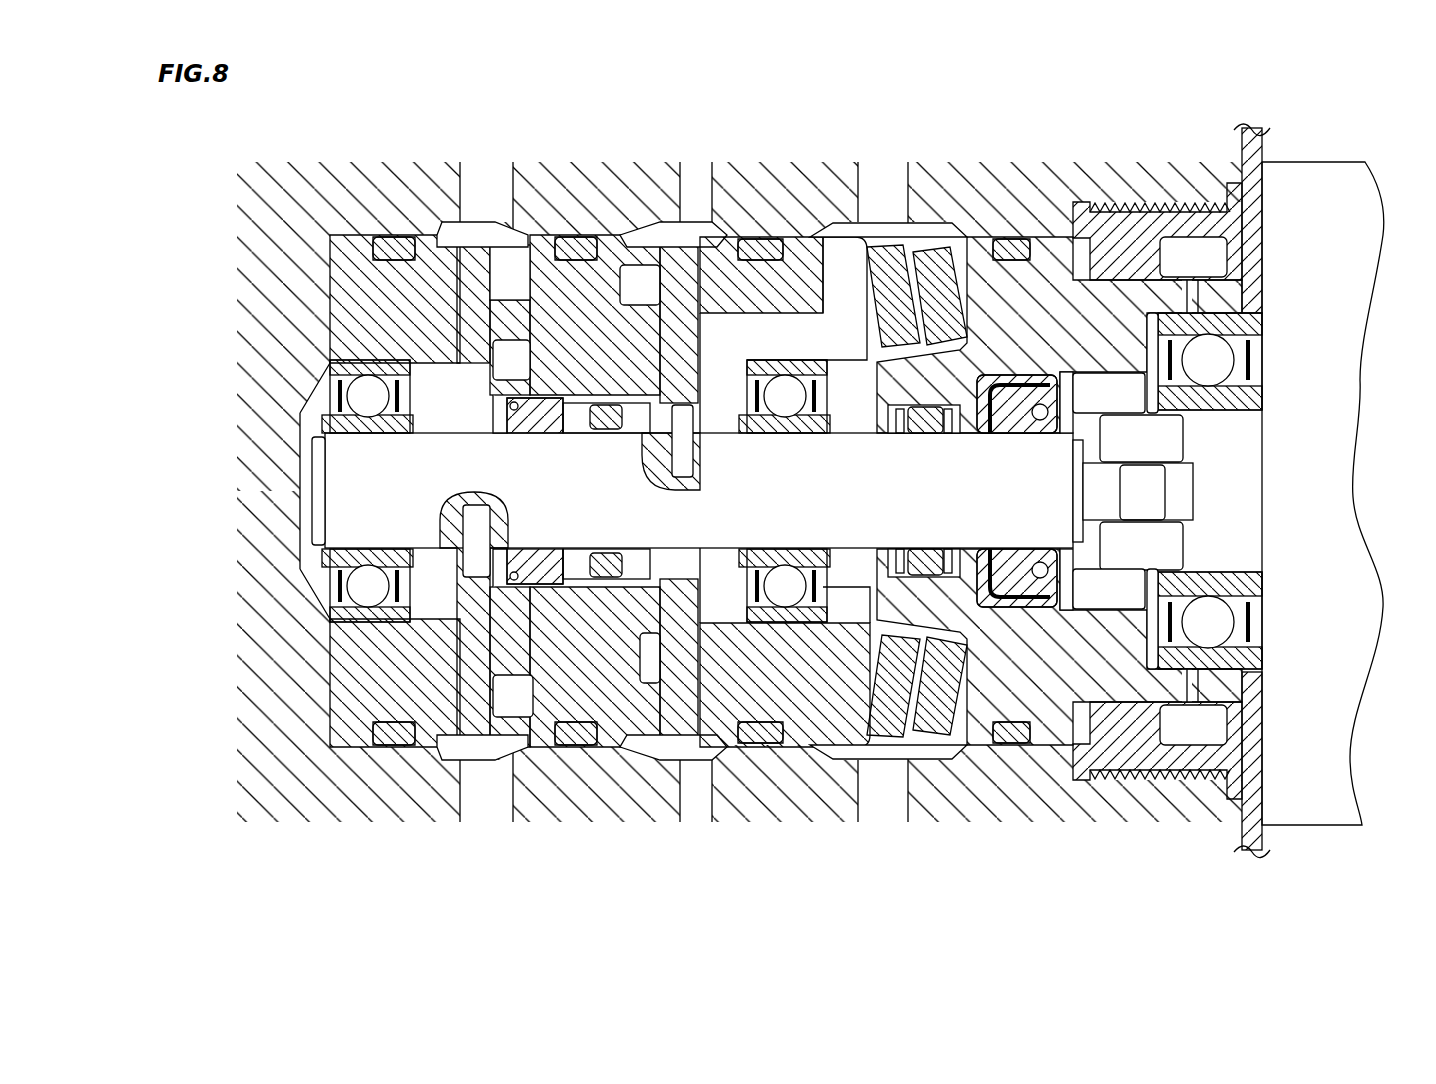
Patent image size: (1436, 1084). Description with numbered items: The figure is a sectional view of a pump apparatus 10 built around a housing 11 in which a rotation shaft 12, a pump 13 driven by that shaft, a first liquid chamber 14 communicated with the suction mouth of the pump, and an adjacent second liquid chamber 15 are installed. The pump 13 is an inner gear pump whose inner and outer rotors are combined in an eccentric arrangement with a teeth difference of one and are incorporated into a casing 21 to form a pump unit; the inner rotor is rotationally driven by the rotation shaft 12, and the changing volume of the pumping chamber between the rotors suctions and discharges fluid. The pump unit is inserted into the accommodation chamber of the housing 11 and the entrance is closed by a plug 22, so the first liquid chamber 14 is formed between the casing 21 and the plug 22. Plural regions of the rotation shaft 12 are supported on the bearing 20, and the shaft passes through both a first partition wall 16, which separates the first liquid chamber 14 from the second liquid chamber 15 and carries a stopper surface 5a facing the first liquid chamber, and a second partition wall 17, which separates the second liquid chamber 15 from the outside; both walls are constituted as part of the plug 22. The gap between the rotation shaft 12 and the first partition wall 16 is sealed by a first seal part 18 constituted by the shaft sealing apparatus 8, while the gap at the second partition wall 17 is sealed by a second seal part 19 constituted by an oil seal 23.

The housing 11 is at (348, 178).
The first liquid chamber 14 is at (767, 343).
The shaft sealing apparatus 8 is at (903, 403).
The pump apparatus 10 is at (807, 148).
The second liquid chamber 15 is at (968, 410).
The plug 22 is at (1055, 258).
The rotation shaft 12 is at (350, 500).
The bearing 20 is at (377, 553).
The stopper surface 5a is at (948, 557).
The oil seal 23 is at (1105, 580).
The casing 21 is at (607, 703).
The pump 13 is at (682, 663).
The first seal part 18 is at (903, 587).
The first partition wall 16 is at (933, 583).
The second partition wall 17 is at (1020, 607).
The second seal part 19 is at (1047, 613).